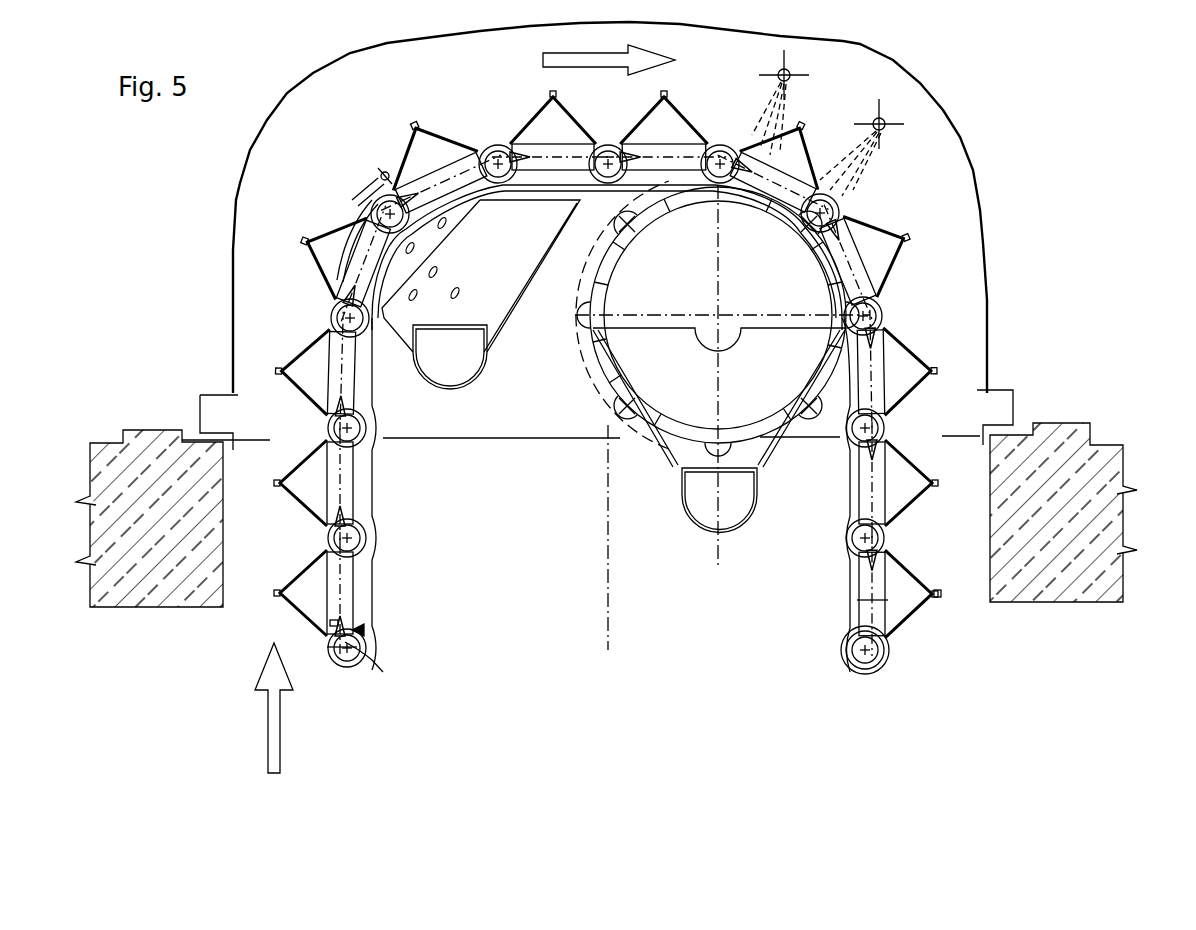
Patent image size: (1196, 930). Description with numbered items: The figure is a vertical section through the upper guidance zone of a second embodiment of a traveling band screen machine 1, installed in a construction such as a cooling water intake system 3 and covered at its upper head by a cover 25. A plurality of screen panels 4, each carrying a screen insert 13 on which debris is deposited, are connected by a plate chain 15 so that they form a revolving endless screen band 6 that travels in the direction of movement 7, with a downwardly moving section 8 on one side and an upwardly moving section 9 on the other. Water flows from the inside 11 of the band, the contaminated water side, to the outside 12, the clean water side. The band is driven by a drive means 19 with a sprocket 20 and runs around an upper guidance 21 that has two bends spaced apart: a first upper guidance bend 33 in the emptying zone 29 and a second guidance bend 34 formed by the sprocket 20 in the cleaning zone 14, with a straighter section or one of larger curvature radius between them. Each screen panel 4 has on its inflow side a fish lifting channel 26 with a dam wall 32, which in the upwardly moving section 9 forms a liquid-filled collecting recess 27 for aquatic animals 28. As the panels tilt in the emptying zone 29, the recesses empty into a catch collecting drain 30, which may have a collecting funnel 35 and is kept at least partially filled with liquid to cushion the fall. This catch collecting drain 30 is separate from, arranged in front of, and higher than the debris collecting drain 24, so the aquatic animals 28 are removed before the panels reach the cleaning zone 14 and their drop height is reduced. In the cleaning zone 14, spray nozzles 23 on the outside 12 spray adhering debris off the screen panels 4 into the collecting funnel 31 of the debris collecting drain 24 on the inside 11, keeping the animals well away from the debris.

The traveling band screen machine 1 is at (1080, 318).
The cooling water intake system 3 is at (114, 593).
The screen panel 4 is at (941, 596).
The endless screen band 6 is at (873, 598).
The direction of movement 7 is at (567, 58).
The downwardly moving section 8 is at (838, 660).
The upwardly moving section 9 is at (380, 553).
The inside 11 is at (656, 682).
The outside 12 is at (208, 728).
The screen insert 13 is at (913, 616).
The cleaning zone 14 is at (893, 178).
The plate chain 15 is at (368, 527).
The drive means 19 is at (952, 303).
The sprocket 20 is at (607, 402).
The upper guidance 21 is at (963, 245).
The spray nozzle 23 is at (790, 72).
The debris collecting drain 24 is at (733, 512).
The cover 25 is at (232, 242).
The fish lifting channel 26 is at (336, 270).
The collecting recess 27 is at (323, 645).
The aquatic animals 28 is at (460, 264).
The emptying zone 29 is at (345, 190).
The catch collecting drain 30 is at (455, 376).
The collecting funnel 31 is at (657, 443).
The dam wall 32 is at (365, 612).
The first upper guidance bend 33 is at (374, 162).
The second guidance bend 34 is at (893, 207).
The collecting funnel 35 is at (507, 297).